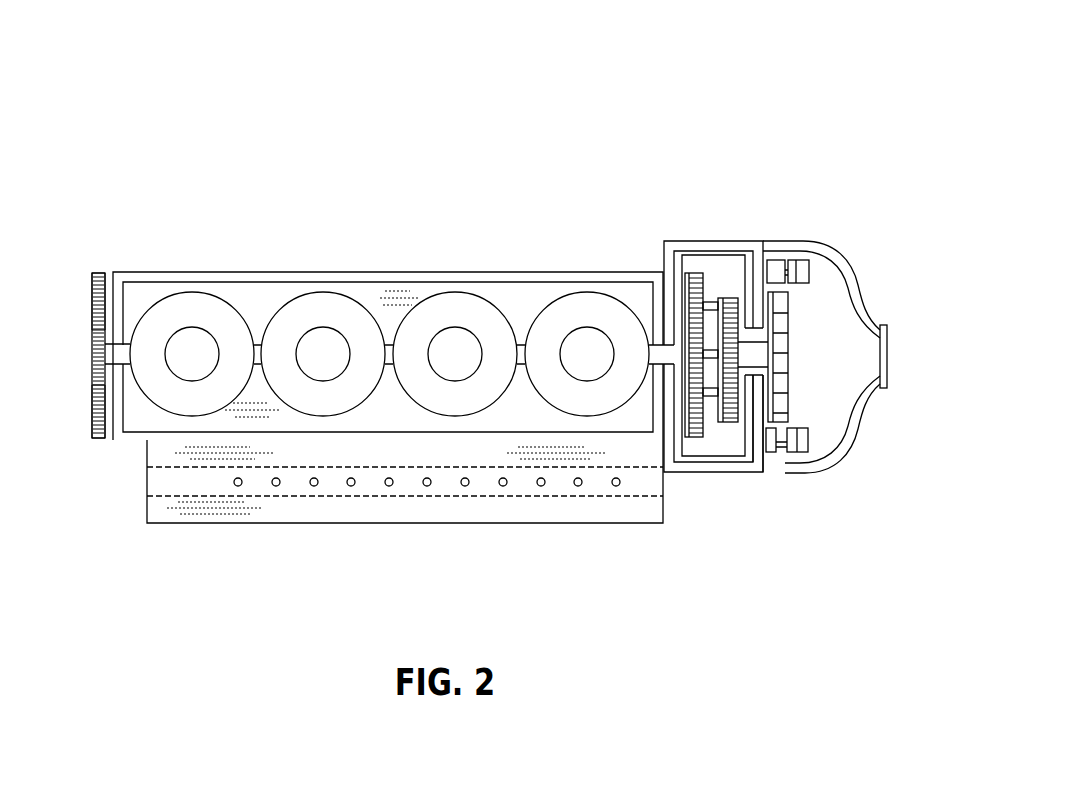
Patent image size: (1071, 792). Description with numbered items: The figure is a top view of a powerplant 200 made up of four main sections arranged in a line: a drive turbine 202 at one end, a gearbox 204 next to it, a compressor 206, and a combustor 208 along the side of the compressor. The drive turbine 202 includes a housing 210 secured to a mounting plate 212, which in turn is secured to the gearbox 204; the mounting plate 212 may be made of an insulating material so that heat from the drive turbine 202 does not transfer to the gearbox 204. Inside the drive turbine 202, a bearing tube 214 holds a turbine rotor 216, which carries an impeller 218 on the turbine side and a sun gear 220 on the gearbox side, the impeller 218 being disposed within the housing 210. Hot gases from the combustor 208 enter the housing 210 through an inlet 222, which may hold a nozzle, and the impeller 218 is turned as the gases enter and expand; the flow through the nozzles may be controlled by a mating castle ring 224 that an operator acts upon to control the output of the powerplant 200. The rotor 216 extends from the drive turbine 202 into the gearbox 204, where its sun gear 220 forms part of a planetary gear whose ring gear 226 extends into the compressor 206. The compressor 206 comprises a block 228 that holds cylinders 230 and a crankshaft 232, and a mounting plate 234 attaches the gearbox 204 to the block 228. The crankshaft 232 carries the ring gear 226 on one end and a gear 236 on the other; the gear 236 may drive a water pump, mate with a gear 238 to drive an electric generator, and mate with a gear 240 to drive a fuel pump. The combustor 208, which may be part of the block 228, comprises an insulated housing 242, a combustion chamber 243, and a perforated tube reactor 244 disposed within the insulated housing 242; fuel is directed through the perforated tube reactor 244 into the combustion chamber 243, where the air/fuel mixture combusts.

The powerplant 200 is at (490, 267).
The drive turbine 202 is at (849, 298).
The gearbox 204 is at (742, 297).
The compressor 206 is at (377, 291).
The combustor 208 is at (404, 532).
The housing 210 is at (840, 345).
The mounting plate 212 is at (722, 316).
The bearing tube 214 is at (834, 423).
The turbine rotor 216 is at (833, 332).
The impeller 218 is at (842, 359).
The sun gear 220 is at (722, 409).
The inlet 222 is at (802, 527).
The mating castle ring 224 is at (827, 402).
The ring gear 226 is at (634, 441).
The block 228 is at (388, 314).
The cylinders 230 is at (389, 317).
The crankshaft 232 is at (389, 390).
The mounting plate 234 is at (659, 314).
The gear 236 is at (61, 355).
The gear 238 is at (72, 267).
The gear 240 is at (72, 449).
The insulated housing 242 is at (405, 519).
The combustion chamber 243 is at (405, 526).
The perforated tube reactor 244 is at (385, 499).